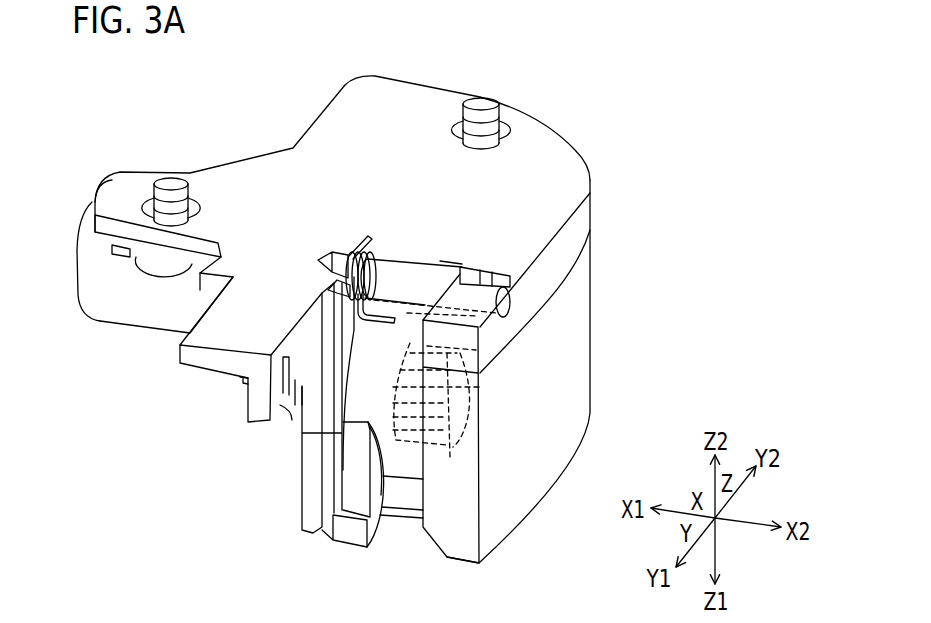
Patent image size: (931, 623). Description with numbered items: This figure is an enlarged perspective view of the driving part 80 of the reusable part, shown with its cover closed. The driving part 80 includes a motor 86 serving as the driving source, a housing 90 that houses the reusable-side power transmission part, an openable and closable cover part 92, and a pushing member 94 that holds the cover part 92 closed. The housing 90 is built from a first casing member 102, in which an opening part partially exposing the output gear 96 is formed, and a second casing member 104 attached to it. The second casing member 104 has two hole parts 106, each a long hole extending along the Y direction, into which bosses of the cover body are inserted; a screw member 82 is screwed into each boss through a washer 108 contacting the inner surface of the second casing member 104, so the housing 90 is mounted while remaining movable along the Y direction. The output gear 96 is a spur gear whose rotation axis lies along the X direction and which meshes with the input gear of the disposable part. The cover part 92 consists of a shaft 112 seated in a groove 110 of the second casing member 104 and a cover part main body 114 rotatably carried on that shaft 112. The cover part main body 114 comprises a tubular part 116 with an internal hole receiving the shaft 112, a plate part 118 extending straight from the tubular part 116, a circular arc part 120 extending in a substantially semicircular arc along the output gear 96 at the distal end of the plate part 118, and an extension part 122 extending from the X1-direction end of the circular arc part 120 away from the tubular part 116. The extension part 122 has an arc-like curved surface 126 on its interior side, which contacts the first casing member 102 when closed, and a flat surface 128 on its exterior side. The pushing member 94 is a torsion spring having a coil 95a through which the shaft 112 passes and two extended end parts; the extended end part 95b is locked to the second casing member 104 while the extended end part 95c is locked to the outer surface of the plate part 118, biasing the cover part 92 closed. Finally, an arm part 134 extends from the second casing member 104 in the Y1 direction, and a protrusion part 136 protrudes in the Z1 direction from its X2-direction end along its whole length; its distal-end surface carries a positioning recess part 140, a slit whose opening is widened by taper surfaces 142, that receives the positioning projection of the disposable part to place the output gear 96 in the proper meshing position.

The driving part 80 is at (282, 85).
The screw member 82 is at (173, 180).
The motor 86 is at (109, 305).
The housing 90 is at (580, 126).
The cover part 92 is at (410, 482).
The pushing member 94 is at (323, 262).
The coil 95a is at (330, 252).
The extended end part 95b is at (361, 252).
The extended end part 95c is at (402, 326).
The output gear 96 is at (448, 445).
The first casing member 102 is at (583, 313).
The second casing member 104 is at (582, 222).
The hole part 106 is at (200, 205).
The washer 108 is at (112, 249).
The groove 110 is at (475, 267).
The shaft 112 is at (490, 266).
The cover part main body 114 is at (410, 266).
The tubular part 116 is at (448, 262).
The plate part 118 is at (458, 318).
The circular arc part 120 is at (460, 378).
The extension part 122 is at (347, 534).
The curved surface 126 is at (378, 536).
The flat surface 128 is at (353, 489).
The arm part 134 is at (187, 348).
The protrusion part 136 is at (258, 400).
The positioning recess part 140 is at (288, 352).
The taper surface 142 is at (290, 414).